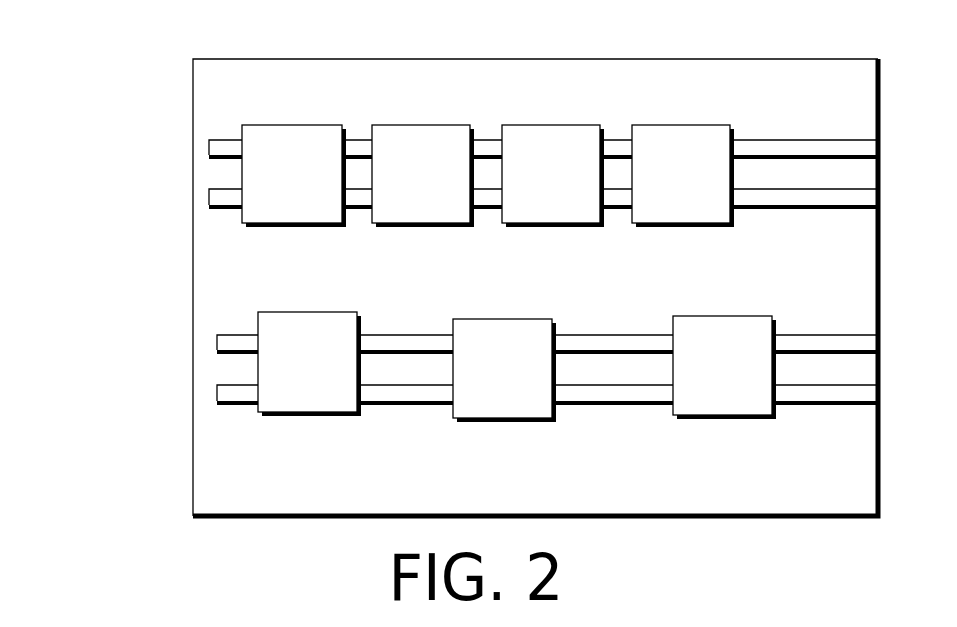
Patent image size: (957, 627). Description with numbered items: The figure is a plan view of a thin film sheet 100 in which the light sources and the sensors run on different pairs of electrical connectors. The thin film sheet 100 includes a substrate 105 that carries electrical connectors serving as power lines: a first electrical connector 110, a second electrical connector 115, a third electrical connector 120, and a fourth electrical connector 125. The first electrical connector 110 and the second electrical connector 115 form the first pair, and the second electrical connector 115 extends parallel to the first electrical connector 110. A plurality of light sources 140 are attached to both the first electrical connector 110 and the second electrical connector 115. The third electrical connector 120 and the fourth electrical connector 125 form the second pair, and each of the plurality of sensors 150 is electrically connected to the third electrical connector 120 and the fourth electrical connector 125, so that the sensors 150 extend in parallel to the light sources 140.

The thin film sheet 100 is at (80, 286).
The substrate 105 is at (193, 109).
The first electrical connector 110 is at (228, 140).
The second electrical connector 115 is at (230, 209).
The third electrical connector 120 is at (616, 334).
The fourth electrical connector 125 is at (609, 406).
The light source 140 is at (327, 124).
The sensor 150 is at (334, 415).